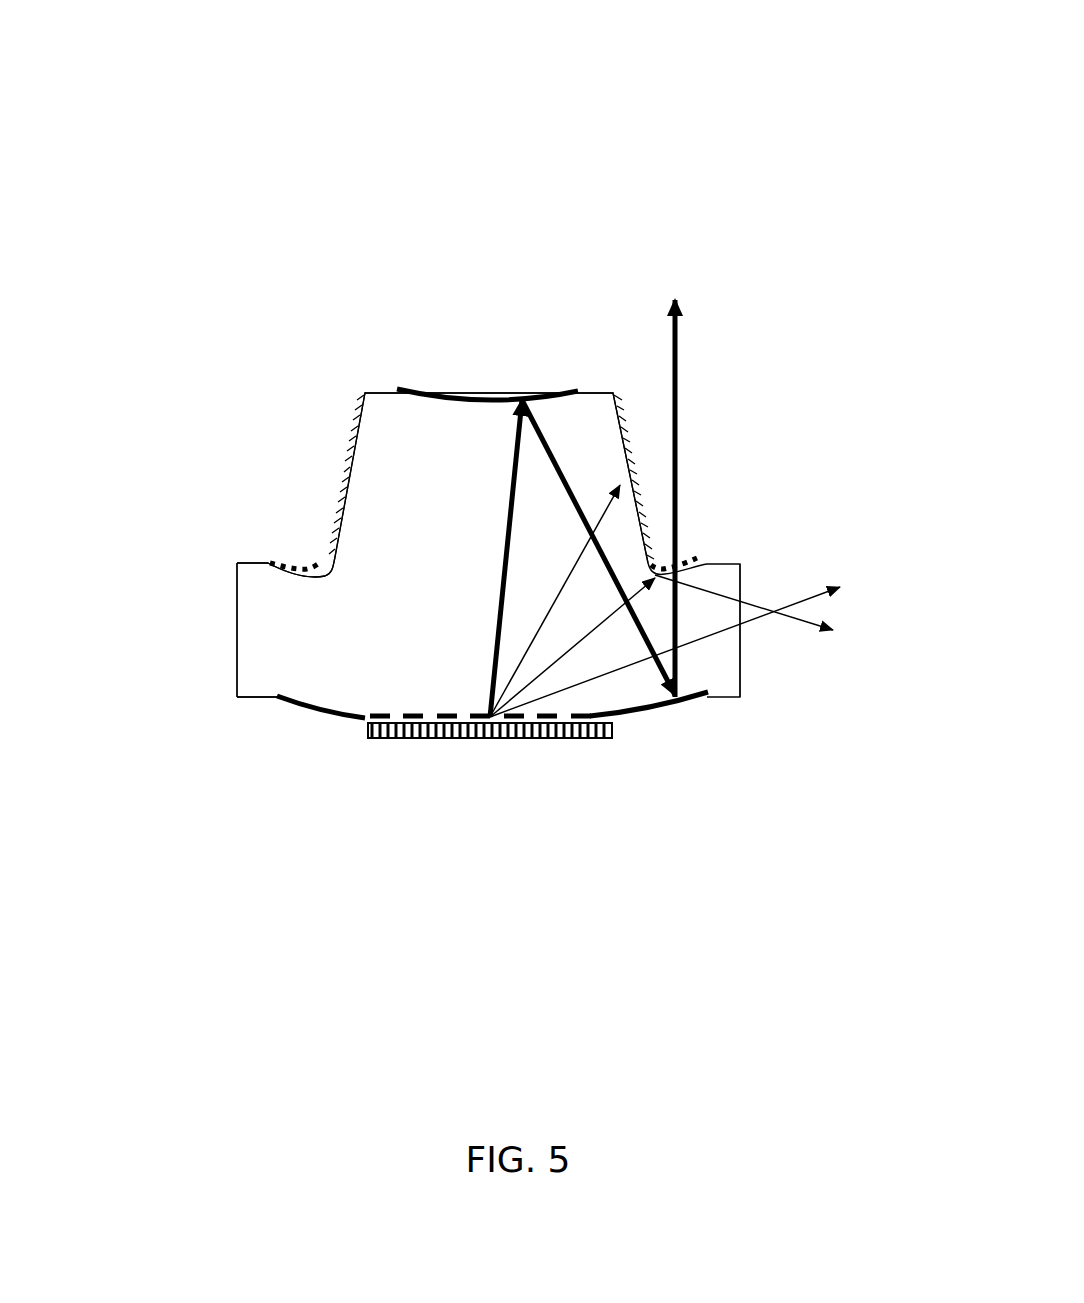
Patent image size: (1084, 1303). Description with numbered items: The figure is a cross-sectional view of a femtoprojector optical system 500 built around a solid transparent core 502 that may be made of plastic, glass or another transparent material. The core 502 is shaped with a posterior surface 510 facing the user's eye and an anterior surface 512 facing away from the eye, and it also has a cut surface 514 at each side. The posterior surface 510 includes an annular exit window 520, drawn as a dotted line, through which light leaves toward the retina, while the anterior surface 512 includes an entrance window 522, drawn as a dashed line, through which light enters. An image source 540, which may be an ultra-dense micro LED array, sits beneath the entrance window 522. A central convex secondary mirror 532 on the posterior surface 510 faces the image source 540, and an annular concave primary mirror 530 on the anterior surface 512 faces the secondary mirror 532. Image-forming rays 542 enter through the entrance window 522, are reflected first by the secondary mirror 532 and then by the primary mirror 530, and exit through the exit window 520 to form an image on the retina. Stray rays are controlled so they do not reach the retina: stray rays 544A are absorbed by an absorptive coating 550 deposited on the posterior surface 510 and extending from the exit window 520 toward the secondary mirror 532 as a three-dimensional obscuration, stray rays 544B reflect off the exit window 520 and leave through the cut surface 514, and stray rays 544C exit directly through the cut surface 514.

The femtoprojector optical system 500 is at (288, 152).
The core 502 is at (491, 484).
The posterior surface 510 is at (238, 561).
The anterior surface 512 is at (245, 703).
The cut surface 514 is at (225, 643).
The exit window 520 is at (802, 417).
The entrance window 522 is at (450, 708).
The primary mirror 530 is at (312, 716).
The secondary mirror 532 is at (416, 388).
The image source 540 is at (391, 744).
The image-forming rays 542 is at (540, 424).
The stray rays 544A is at (520, 670).
The stray rays 544B is at (560, 664).
The stray rays 544C is at (624, 676).
The absorptive coating 550 is at (336, 412).